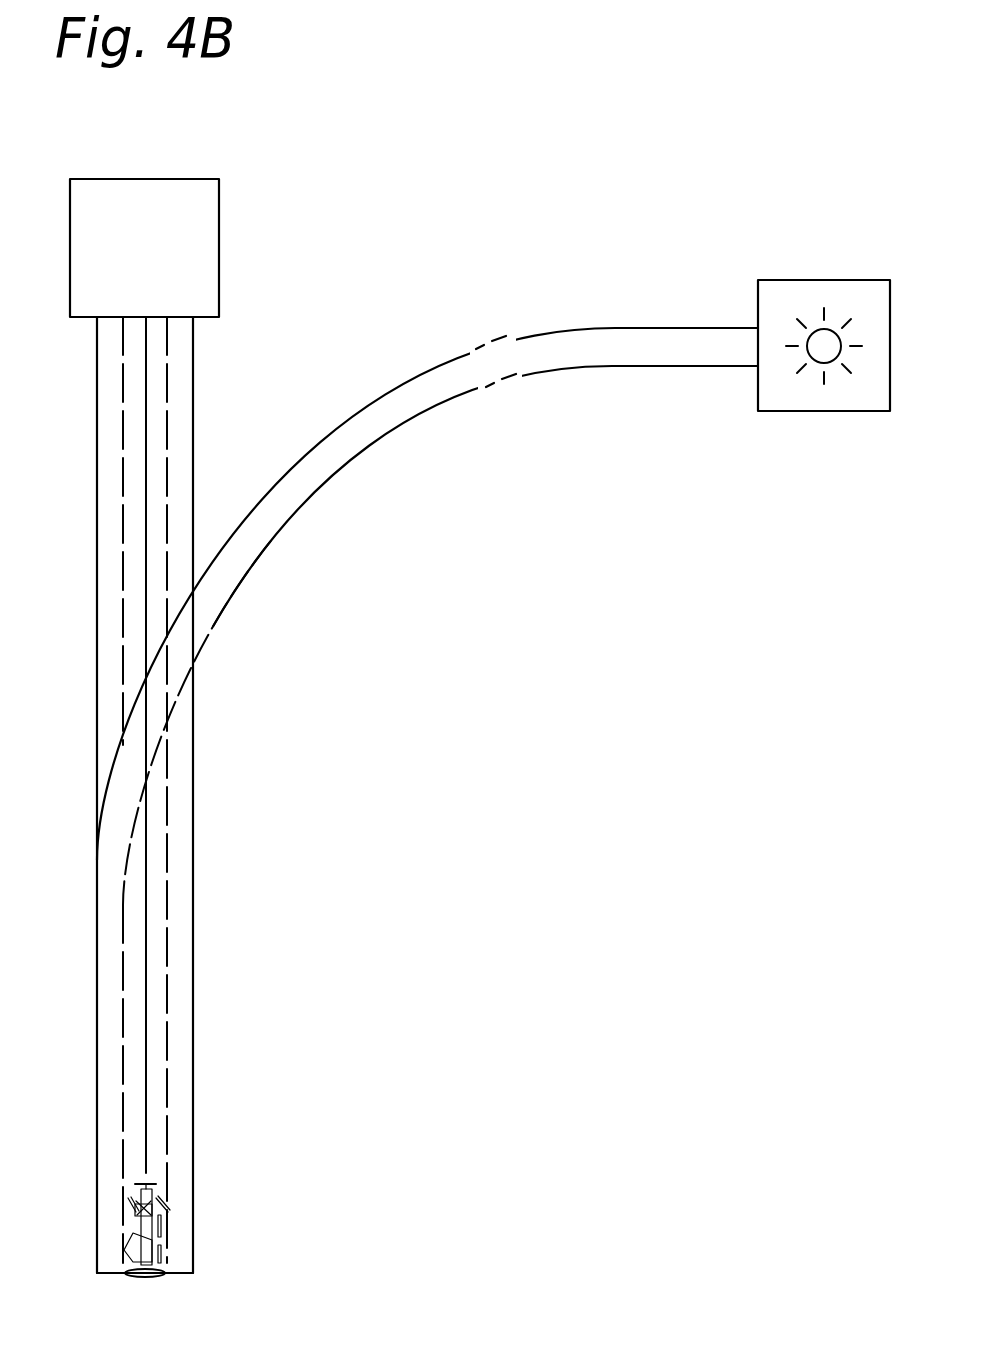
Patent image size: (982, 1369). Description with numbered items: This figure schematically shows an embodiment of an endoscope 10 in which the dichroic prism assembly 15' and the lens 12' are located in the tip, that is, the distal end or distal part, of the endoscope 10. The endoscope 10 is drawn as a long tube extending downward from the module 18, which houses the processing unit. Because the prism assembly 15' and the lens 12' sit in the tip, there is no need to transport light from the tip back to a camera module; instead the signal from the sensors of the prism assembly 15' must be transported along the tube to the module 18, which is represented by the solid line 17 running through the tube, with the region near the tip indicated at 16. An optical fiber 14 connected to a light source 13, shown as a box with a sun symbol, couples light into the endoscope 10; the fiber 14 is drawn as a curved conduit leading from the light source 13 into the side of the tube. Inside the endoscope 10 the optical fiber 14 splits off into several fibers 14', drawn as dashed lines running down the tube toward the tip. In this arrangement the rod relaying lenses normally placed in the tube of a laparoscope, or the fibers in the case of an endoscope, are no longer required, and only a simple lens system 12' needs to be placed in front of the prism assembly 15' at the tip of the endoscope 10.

The endoscope 10 is at (194, 830).
The lens 12' is at (180, 1295).
The light source 13 is at (838, 290).
The optical fiber 14 is at (427, 603).
The fibers 14' is at (324, 790).
The dichroic prism assembly 15' is at (205, 1224).
The distal housing 16 is at (183, 1182).
The signal cable 17 is at (146, 437).
The module 18 is at (207, 244).